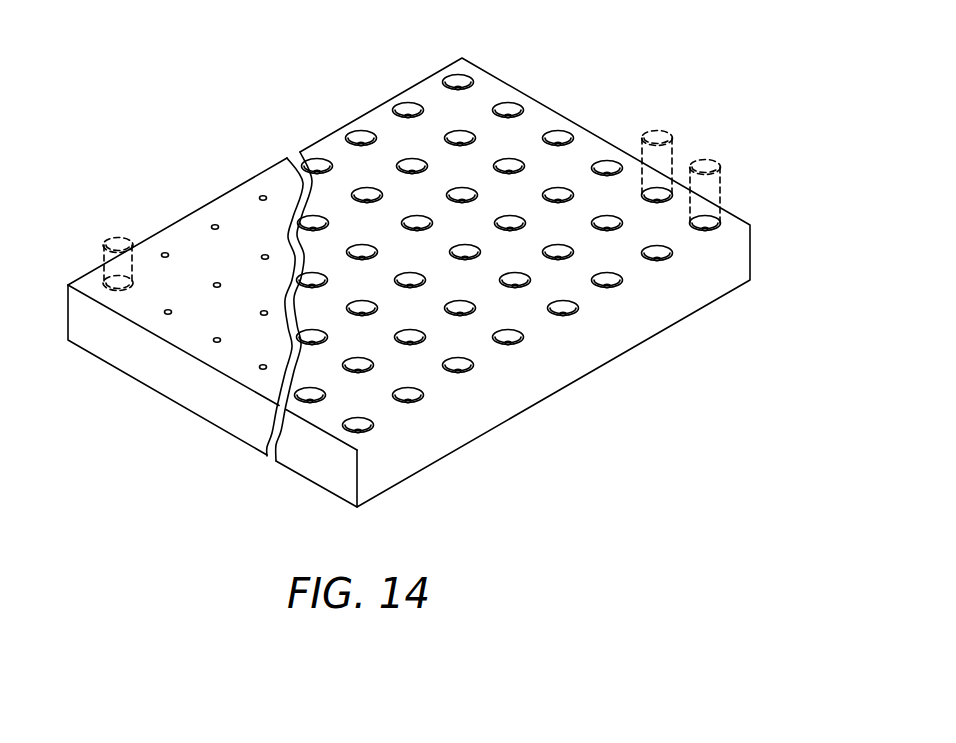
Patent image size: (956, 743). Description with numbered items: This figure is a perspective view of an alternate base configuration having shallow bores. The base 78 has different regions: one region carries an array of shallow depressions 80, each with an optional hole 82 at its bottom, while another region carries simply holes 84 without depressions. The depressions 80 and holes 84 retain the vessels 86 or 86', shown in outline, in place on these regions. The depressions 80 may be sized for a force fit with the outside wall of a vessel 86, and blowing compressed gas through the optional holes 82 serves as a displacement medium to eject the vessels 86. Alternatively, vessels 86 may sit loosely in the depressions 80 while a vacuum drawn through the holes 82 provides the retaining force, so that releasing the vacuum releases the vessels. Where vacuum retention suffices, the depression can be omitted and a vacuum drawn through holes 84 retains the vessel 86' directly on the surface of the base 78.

The base 78 is at (752, 256).
The shallow depressions 80 is at (668, 262).
The optional holes 82 is at (607, 172).
The holes 84 is at (166, 313).
The vessels 86 is at (735, 178).
The vessel 86' is at (80, 264).